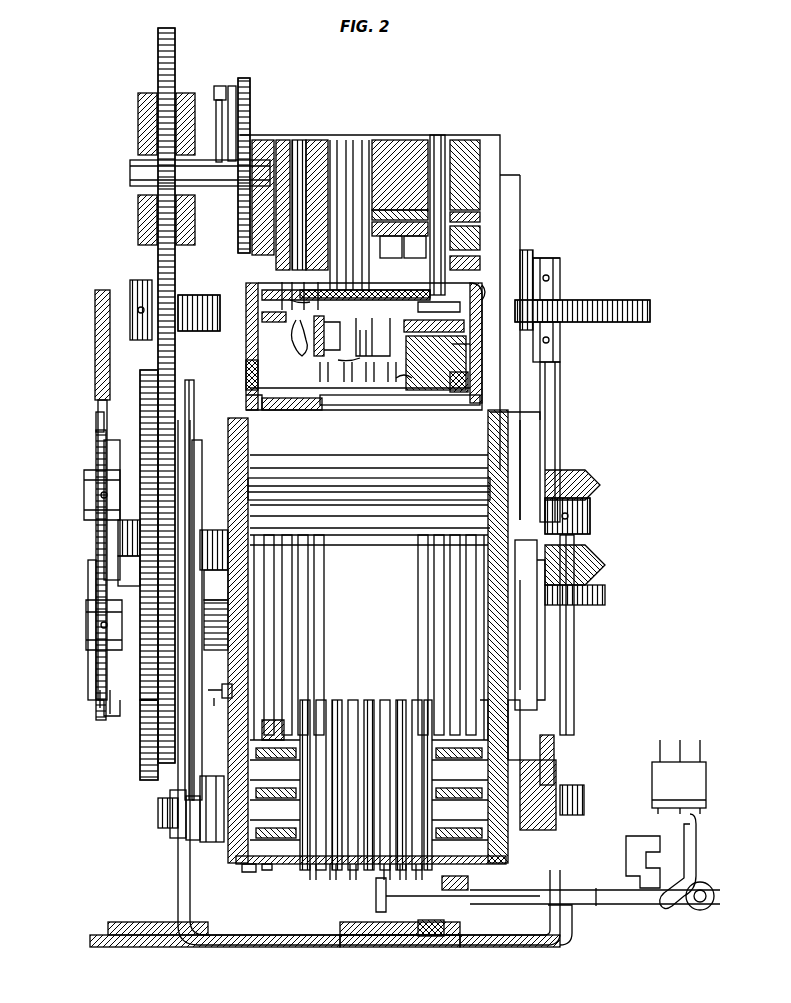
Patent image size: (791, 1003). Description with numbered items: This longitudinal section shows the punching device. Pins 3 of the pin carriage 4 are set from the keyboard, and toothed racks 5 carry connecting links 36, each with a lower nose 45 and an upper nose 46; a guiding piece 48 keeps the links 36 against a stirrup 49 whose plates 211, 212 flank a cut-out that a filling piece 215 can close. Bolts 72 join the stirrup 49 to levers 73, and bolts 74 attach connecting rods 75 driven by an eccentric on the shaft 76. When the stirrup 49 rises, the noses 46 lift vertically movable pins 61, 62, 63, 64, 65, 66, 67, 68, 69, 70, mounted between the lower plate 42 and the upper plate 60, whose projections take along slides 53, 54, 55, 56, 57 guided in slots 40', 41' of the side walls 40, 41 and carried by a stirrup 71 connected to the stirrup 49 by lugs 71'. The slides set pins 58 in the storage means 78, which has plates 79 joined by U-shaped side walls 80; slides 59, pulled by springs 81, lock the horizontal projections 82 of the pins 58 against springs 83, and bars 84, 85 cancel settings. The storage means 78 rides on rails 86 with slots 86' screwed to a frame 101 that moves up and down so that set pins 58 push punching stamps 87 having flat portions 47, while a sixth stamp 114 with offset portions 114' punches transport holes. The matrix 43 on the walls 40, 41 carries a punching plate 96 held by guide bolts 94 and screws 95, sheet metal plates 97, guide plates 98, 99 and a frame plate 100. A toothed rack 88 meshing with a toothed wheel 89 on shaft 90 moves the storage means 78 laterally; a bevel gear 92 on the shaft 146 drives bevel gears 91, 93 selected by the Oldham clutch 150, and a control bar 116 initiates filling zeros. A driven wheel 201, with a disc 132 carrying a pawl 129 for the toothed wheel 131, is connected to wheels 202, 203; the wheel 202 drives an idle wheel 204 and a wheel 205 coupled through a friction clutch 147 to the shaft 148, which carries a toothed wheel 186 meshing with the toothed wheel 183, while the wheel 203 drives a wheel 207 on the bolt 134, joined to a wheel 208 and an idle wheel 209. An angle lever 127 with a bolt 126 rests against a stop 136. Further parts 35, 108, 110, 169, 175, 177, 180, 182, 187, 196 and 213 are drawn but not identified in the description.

The pins 3 is at (676, 822).
The pin carriage 4 is at (656, 770).
The toothed racks 5 is at (634, 836).
The pivot 35 is at (705, 896).
The connecting links 36 is at (596, 890).
The wall 40 is at (529, 636).
The longitudinal slot 40' is at (524, 730).
The wall 41 is at (355, 870).
The longitudinal slot 41' is at (240, 883).
The plate 42 is at (266, 870).
The matrix 43 is at (390, 140).
The lower nose 45 is at (354, 947).
The upper nose 46 is at (378, 890).
The flat portions 47 is at (388, 272).
The guiding piece 48 is at (468, 882).
The stirrup 49 is at (236, 946).
The slide 53 is at (264, 720).
The slide 54 is at (286, 616).
The slide 55 is at (458, 600).
The slide 56 is at (300, 590).
The slide 57 is at (430, 584).
The pins 58 is at (298, 297).
The slides 59 is at (410, 352).
The upper plate 60 is at (330, 708).
The vertically movable pin 61 is at (428, 877).
The vertically movable pin 62 is at (392, 706).
The vertically movable pin 63 is at (397, 877).
The vertically movable pin 64 is at (372, 708).
The vertically movable pin 65 is at (360, 878).
The vertically movable pin 66 is at (352, 706).
The vertically movable pin 67 is at (334, 878).
The vertically movable pin 68 is at (316, 706).
The vertically movable pin 69 is at (312, 870).
The vertically movable pin 70 is at (412, 708).
The stirrup 71 is at (545, 458).
The lugs 71' is at (388, 580).
The bolts 72 is at (158, 810).
The levers 73 is at (206, 860).
The bolts 74 is at (186, 838).
The connecting rods 75 is at (568, 636).
The shaft 76 is at (334, 505).
The storage means 78 is at (394, 300).
The plate 79 is at (430, 298).
The U-shaped side walls 80 is at (474, 356).
The springs 81 is at (436, 363).
The horizontal projections 82 is at (327, 336).
The springs 83 is at (400, 328).
The bar 84 is at (299, 338).
The bar 85 is at (242, 346).
The rails 86 is at (488, 343).
The slots 86' is at (350, 376).
The punching stamps 87 is at (387, 244).
The toothed rack 88 is at (489, 287).
The toothed wheel 89 is at (630, 300).
The shaft 90 is at (562, 364).
The bevel gear 91 is at (600, 482).
The bevel gear 92 is at (527, 625).
The bevel gear 93 is at (598, 565).
The guide bolts 94 is at (455, 142).
The screws 95 is at (300, 140).
The punching plate 96 is at (366, 210).
The sheet metal plates 97 is at (465, 175).
The upper guide plate 98 is at (470, 220).
The lower guide plate 99 is at (480, 244).
The frame plate 100 is at (468, 266).
The frame 101 is at (494, 336).
The plate 108 is at (102, 290).
The left frame plate 110 is at (224, 640).
The sixth punching stamp 114 is at (400, 200).
The offset portions 114' is at (365, 297).
The control bar 116 is at (412, 406).
The bolt 126 is at (100, 698).
The angle lever 127 is at (92, 586).
The pawl 129 is at (118, 560).
The toothed wheel 131 is at (108, 466).
The disc 132 is at (96, 418).
The bolt 134 is at (240, 704).
The stop 136 is at (116, 708).
The shaft 146 is at (374, 544).
The friction clutch 147 is at (186, 93).
The shaft 148 is at (130, 173).
The Oldham clutch 150 is at (592, 516).
The gear 169 is at (214, 625).
The plate 175 is at (289, 405).
The gear 177 is at (199, 313).
The rod 180 is at (216, 132).
The bar 182 is at (232, 86).
The toothed wheel 183 is at (250, 86).
The toothed wheel 186 is at (262, 140).
The stud 187 is at (216, 86).
The pin 196 is at (372, 340).
The wheel 201 is at (140, 382).
The wheel 202 is at (215, 550).
The toothed wheel 203 is at (126, 522).
The idle wheel 204 is at (150, 370).
The wheel 205 is at (158, 40).
The wheel 207 is at (140, 748).
The wheel 208 is at (192, 716).
The idle wheel 209 is at (218, 620).
The plate 211 is at (306, 947).
The plate 212 is at (460, 947).
The end cap 213 is at (548, 946).
The filling piece 215 is at (422, 947).